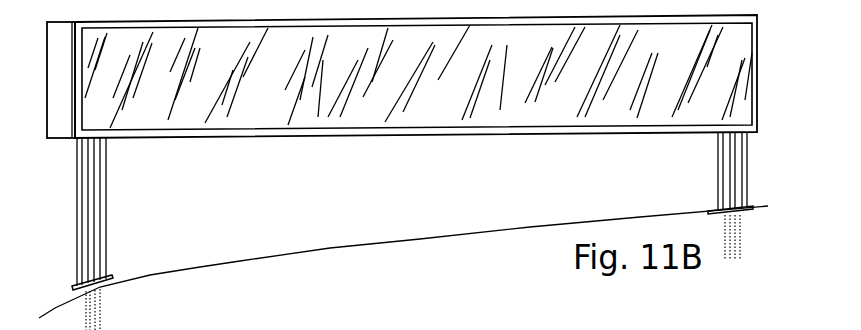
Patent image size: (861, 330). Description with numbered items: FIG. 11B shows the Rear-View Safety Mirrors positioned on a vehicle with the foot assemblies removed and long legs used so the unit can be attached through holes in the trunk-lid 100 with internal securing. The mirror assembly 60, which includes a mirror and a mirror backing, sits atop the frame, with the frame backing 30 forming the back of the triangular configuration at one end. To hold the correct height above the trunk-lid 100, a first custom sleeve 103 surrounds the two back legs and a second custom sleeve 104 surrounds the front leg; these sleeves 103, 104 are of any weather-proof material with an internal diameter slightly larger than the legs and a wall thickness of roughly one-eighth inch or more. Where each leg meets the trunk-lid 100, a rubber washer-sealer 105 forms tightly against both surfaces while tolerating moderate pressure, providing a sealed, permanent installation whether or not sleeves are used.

The frame backing 30 is at (53, 138).
The mirror assembly 60 is at (424, 150).
The trunk-lid 100 is at (420, 240).
The custom sleeve #1 103 is at (107, 191).
The custom sleeve #2 104 is at (718, 153).
The washer-sealer 105 is at (113, 275).